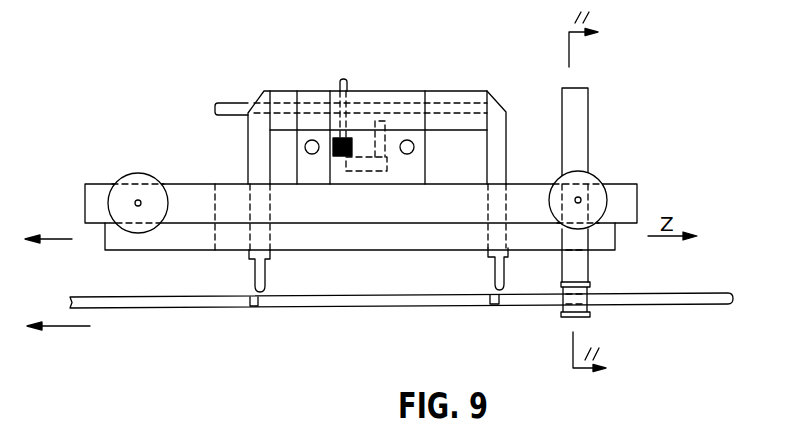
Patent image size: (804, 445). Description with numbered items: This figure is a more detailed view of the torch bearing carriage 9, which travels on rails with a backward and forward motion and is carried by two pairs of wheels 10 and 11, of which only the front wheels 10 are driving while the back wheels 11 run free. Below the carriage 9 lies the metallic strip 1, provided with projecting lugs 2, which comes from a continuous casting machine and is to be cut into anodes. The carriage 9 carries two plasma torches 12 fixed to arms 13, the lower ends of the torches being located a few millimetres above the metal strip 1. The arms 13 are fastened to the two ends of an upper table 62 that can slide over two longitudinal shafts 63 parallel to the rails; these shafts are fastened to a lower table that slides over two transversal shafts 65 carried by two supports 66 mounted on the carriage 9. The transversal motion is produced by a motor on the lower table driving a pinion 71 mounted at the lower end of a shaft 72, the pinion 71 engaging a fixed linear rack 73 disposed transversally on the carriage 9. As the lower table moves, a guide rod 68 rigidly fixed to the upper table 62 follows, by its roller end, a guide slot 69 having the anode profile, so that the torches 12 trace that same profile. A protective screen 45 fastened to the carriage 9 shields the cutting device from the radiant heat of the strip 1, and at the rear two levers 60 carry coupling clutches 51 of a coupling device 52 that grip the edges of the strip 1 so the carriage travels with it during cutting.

The metallic strip 1 is at (695, 303).
The projecting lugs 2 is at (255, 308).
The torch bearing carriage 9 is at (190, 194).
The driving wheels 10 is at (133, 176).
The back wheels 11 is at (588, 182).
The plasma torches 12 is at (262, 277).
The arms 13 is at (500, 143).
The protective screen 45 is at (155, 246).
The coupling clutches 51 is at (590, 286).
The coupling device 52 is at (590, 147).
The levers 60 is at (575, 108).
The upper table 62 is at (284, 92).
The longitudinal shafts 63 is at (228, 106).
The transversal shafts 65 is at (308, 153).
The supports 66 is at (417, 165).
The guide rod 68 is at (382, 122).
The guide slot 69 is at (374, 172).
The pinion 71 is at (341, 157).
The shaft 72 is at (346, 85).
The linear rack 73 is at (333, 152).